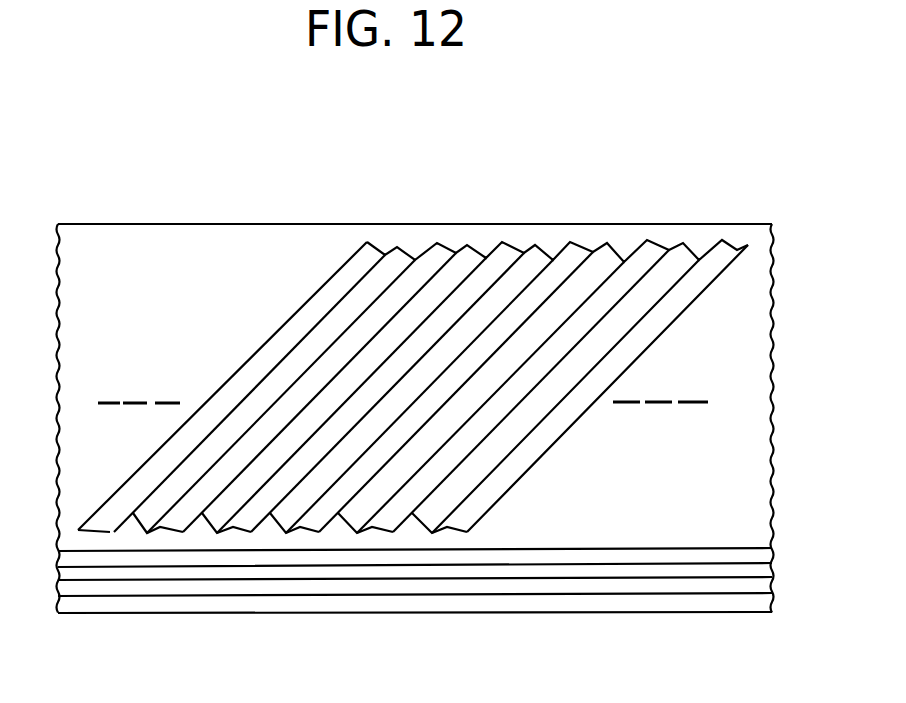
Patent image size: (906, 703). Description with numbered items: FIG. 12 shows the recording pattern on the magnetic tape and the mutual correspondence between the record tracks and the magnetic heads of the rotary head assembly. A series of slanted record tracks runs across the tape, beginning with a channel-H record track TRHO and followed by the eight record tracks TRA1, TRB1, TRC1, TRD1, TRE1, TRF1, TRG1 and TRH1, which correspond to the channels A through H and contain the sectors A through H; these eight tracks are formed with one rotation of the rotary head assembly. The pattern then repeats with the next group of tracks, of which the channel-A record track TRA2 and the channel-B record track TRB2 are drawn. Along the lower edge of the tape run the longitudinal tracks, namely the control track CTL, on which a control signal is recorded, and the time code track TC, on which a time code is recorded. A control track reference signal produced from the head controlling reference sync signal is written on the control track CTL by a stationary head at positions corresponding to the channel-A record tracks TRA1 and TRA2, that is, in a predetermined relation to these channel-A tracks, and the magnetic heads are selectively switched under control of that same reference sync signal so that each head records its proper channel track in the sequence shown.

The channel-H record track TRHO is at (367, 242).
The channel-A record track TRA1 is at (397, 247).
The channel-B record track TRB1 is at (437, 243).
The channel-C record track TRC1 is at (467, 245).
The channel-D record track TRD1 is at (502, 242).
The channel-E record track TRE1 is at (535, 245).
The channel-F record track TRF1 is at (570, 242).
The channel-G record track TRG1 is at (607, 243).
The channel-H record track TRH1 is at (647, 240).
The channel-A record track TRA2 is at (683, 243).
The channel-B record track TRB2 is at (722, 240).
The control track CTL is at (638, 558).
The time code track TC is at (713, 588).